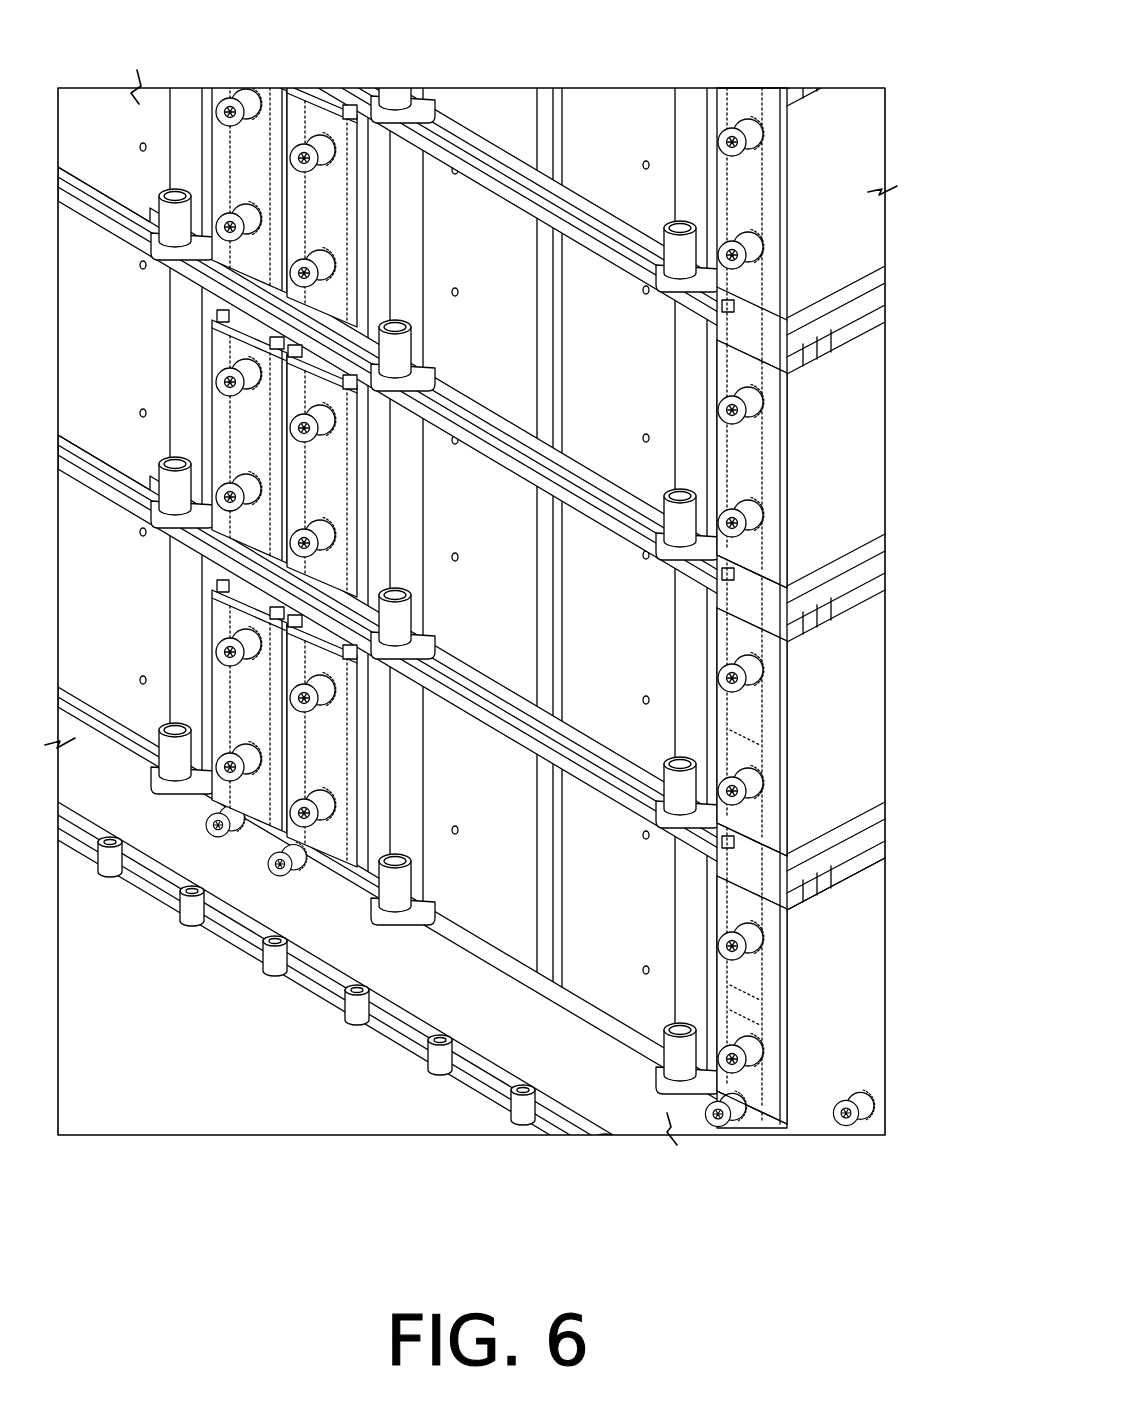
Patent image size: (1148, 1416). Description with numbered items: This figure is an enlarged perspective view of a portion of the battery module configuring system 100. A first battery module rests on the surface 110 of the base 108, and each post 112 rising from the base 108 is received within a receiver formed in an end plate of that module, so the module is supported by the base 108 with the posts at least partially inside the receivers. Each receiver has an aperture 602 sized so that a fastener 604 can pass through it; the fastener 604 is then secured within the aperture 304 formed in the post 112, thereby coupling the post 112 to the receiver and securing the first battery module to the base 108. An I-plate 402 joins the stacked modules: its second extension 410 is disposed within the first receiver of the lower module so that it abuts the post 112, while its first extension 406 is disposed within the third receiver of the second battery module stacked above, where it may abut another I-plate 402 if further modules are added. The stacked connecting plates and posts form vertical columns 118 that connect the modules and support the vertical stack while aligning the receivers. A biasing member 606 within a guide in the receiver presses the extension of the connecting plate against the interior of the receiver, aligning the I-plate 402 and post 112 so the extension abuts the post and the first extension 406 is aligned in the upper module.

The system 100 is at (503, 592).
The base 108 is at (318, 1022).
The surface 110 is at (412, 988).
The post 112 is at (753, 1082).
The vertical column 118 is at (220, 557).
The aperture 304 is at (336, 798).
The I-plate 402 is at (886, 824).
The first extension 406 is at (747, 737).
The second extension 410 is at (737, 967).
The aperture 602 is at (748, 1037).
The fastener 604 is at (236, 786).
The biasing member 606 is at (411, 353).